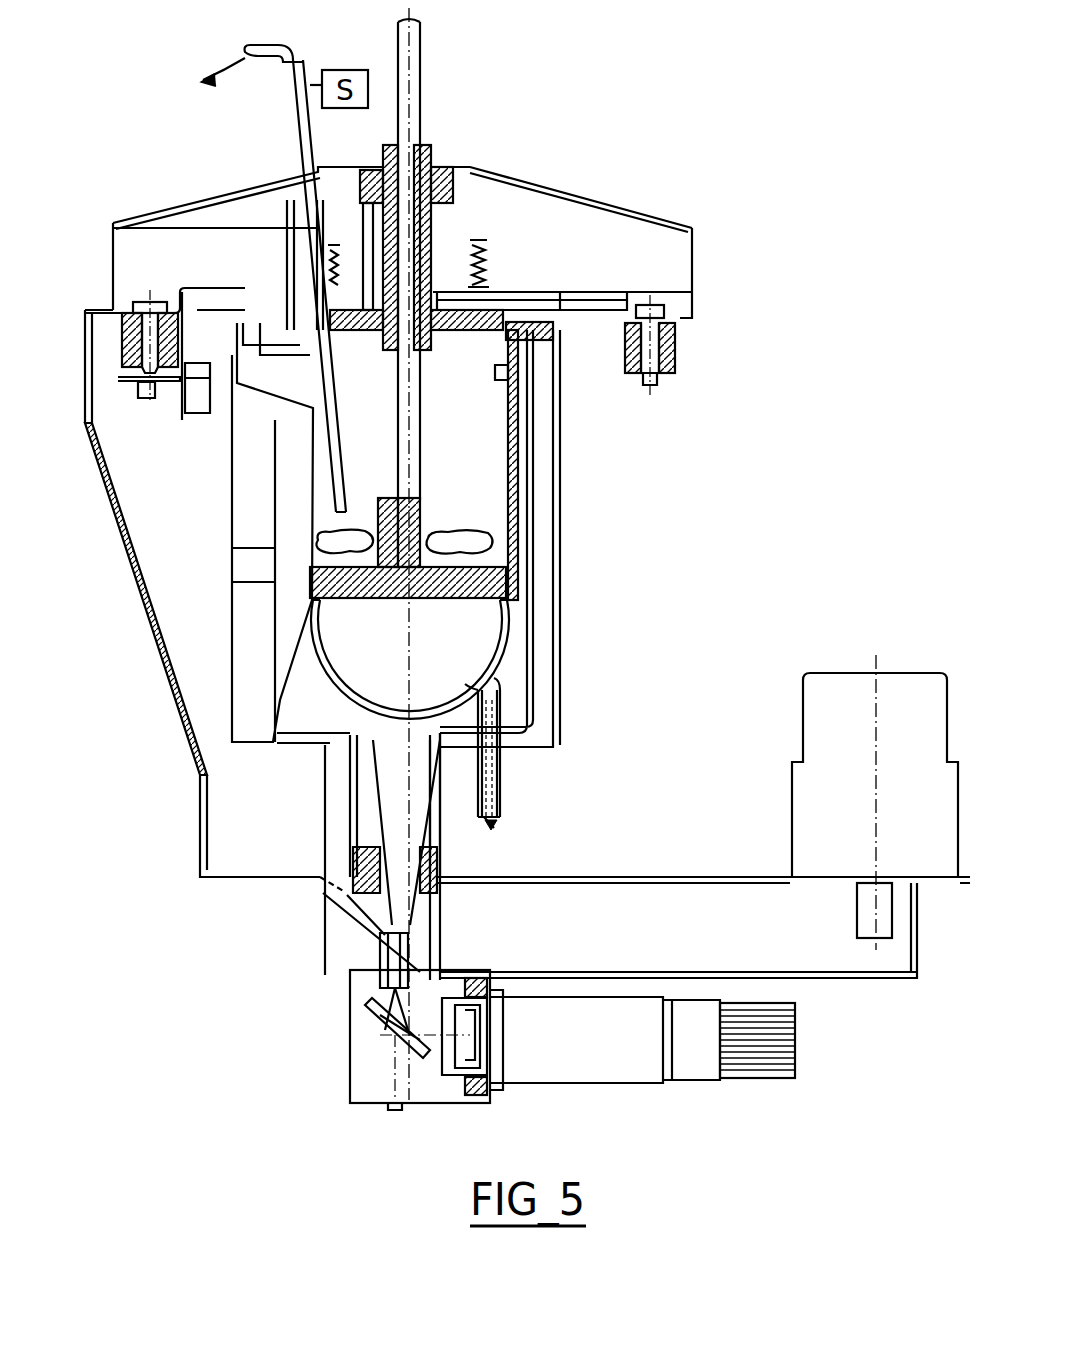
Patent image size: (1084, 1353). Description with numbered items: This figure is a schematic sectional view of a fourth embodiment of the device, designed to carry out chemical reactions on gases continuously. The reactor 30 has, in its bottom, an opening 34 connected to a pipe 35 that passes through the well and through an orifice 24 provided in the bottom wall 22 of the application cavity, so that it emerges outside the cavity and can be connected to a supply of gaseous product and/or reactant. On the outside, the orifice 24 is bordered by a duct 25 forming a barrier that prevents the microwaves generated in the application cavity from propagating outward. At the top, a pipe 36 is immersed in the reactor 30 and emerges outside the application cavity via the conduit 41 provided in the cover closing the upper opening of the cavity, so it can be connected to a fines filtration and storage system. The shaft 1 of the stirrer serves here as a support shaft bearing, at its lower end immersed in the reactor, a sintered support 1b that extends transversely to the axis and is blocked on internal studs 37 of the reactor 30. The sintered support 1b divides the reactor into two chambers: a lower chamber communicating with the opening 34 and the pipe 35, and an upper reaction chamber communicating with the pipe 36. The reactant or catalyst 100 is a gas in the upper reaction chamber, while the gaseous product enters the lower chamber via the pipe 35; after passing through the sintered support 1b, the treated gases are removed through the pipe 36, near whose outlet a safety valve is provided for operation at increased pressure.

The shaft 1 is at (408, 418).
The sintered support 1b is at (438, 600).
The bottom wall 22 is at (540, 742).
The orifice 24 is at (500, 752).
The duct 25 is at (535, 838).
The reactor 30 is at (515, 628).
The opening 34 is at (495, 694).
The pipe 35 is at (500, 775).
The pipe 36 is at (300, 135).
The internal studs 37 is at (500, 582).
The conduit 41 is at (328, 170).
The reactant or catalyst 100 is at (482, 534).